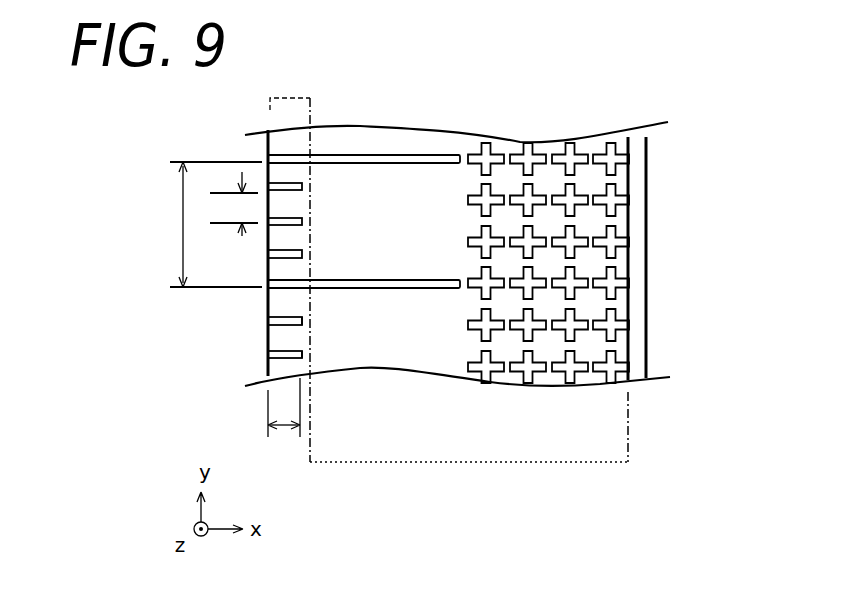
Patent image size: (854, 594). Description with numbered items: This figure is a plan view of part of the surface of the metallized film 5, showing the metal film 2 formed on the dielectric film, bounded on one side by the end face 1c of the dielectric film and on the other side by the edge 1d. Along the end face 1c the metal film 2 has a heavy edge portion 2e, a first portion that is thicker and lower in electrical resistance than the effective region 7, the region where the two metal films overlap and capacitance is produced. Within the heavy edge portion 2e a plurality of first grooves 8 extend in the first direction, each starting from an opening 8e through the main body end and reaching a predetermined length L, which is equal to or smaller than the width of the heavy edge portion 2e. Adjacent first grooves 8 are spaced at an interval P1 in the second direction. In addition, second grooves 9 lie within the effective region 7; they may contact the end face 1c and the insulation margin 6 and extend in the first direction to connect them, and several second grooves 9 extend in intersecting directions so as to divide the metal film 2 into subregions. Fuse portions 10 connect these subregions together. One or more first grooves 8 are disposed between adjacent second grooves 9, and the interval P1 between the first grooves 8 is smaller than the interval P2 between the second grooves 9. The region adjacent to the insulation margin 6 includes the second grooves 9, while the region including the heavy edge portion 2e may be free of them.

The end face of the dielectric film 1c is at (268, 307).
The edge of insulating substrate 1d is at (646, 213).
The metal film 2 is at (368, 147).
The heavy edge portion 2e is at (291, 98).
The metallized film 5 is at (651, 106).
The insulation margin 6 is at (640, 343).
The effective region 7 is at (470, 462).
The first groove 8 is at (302, 322).
The opening of the first groove 8e is at (300, 320).
The second groove 9 is at (400, 288).
The fuse portion 10 is at (548, 158).
The interval between first grooves P1 is at (231, 200).
The interval between second grooves P2 is at (200, 224).
The length of the first groove L is at (284, 426).